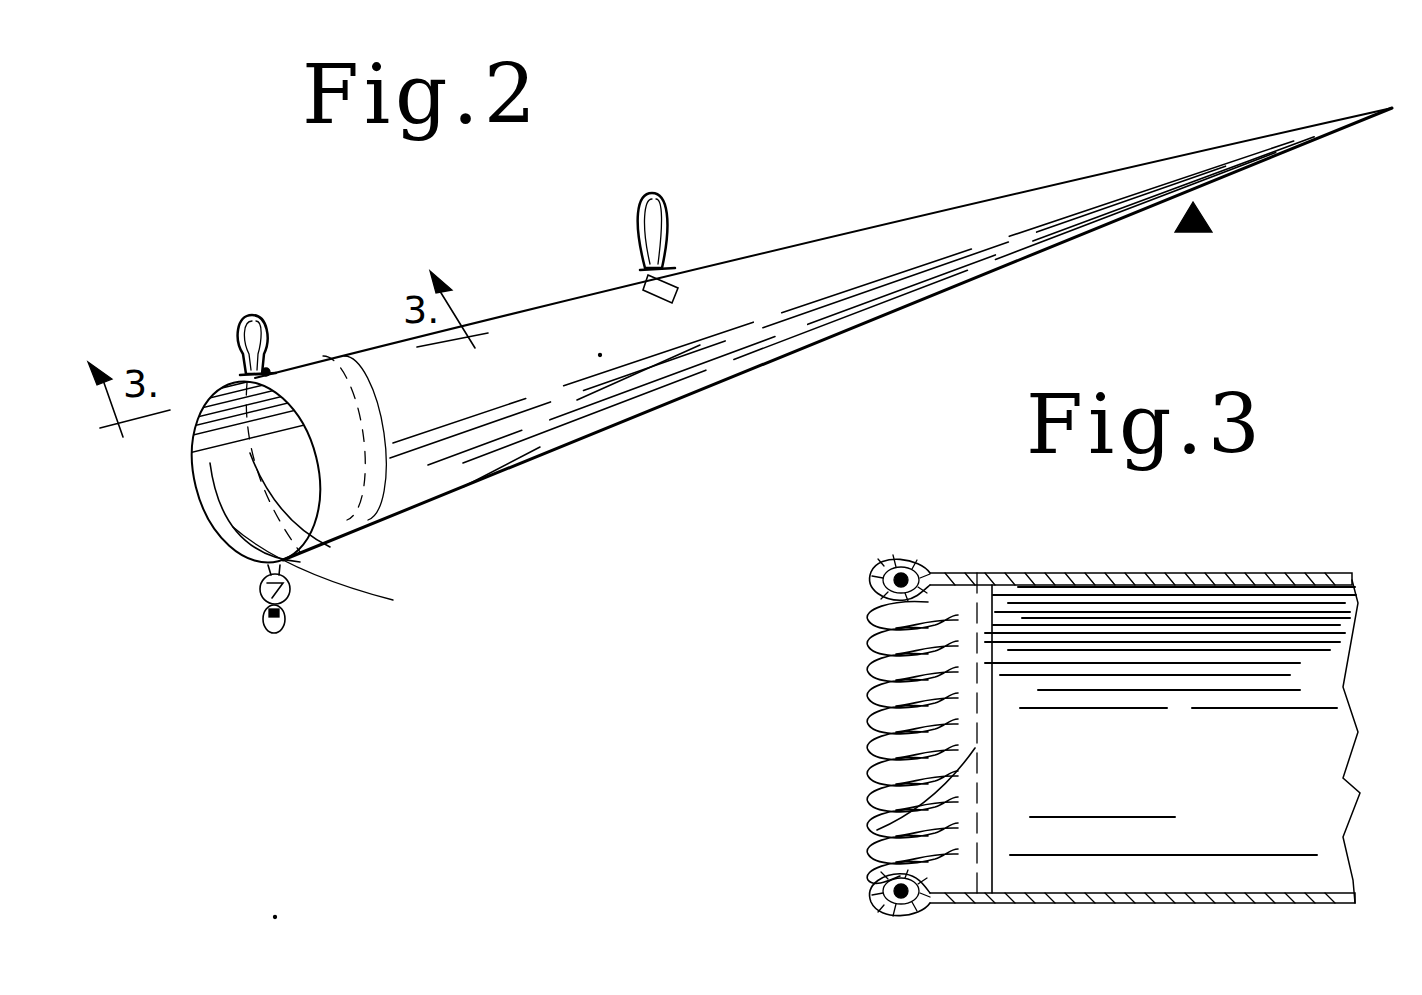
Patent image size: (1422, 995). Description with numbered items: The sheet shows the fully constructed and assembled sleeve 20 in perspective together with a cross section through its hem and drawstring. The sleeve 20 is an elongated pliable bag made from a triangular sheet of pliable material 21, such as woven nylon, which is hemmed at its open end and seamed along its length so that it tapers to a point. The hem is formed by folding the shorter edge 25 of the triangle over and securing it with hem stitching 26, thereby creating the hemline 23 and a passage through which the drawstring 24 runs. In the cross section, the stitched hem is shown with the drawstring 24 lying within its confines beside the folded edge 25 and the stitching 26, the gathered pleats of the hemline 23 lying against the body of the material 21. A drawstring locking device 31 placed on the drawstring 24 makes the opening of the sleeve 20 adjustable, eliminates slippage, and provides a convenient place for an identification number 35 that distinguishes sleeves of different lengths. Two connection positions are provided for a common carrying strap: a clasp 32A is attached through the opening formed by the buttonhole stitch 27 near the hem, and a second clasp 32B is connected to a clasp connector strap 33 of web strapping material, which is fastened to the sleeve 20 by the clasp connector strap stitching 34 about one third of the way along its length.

In FIG. 2, the sleeve 20 is at (1193, 237).
In FIG. 2, the pliable material 21 is at (1037, 210).
In FIG. 3, the pliable material 21 is at (1147, 880).
In FIG. 2, the hemline 23 is at (316, 488).
In FIG. 3, the hemline 23 is at (887, 692).
In FIG. 2, the drawstring 24 is at (265, 628).
In FIG. 3, the drawstring 24 is at (902, 580).
In FIG. 2, the edge 25 is at (272, 499).
In FIG. 3, the edge 25 is at (990, 582).
In FIG. 2, the hem stitching 26 is at (358, 465).
In FIG. 3, the hem stitching 26 is at (877, 830).
In FIG. 2, the buttonhole stitch 27 is at (268, 373).
In FIG. 2, the drawstring locking device 31 is at (283, 613).
In FIG. 2, the clasp 32A is at (262, 366).
In FIG. 2, the second clasp 32B is at (640, 207).
In FIG. 2, the clasp connector strap 33 is at (672, 266).
In FIG. 2, the clasp connector strap stitching 34 is at (700, 267).
In FIG. 2, the identification number 35 is at (258, 587).